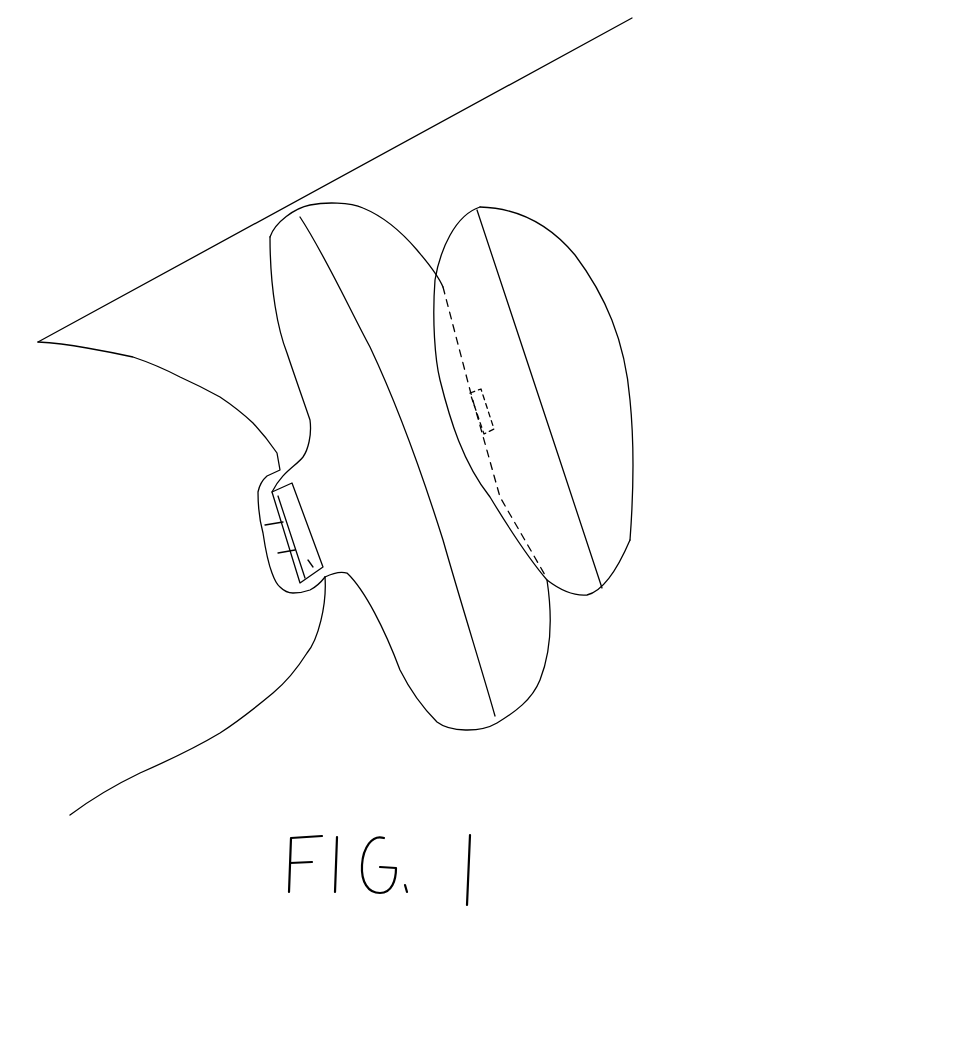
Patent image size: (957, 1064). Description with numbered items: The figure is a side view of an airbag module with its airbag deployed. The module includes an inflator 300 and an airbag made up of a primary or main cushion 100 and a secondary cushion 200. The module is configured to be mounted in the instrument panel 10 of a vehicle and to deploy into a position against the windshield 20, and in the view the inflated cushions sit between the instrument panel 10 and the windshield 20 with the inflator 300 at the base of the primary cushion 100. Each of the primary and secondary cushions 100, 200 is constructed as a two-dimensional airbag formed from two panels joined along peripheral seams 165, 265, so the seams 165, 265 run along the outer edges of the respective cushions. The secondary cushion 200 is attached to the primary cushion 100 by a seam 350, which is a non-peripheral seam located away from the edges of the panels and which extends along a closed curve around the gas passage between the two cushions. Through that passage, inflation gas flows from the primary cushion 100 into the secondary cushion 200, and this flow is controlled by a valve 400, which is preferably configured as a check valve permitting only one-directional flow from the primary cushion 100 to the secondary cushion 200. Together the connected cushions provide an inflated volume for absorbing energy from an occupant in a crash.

The instrument panel 10 is at (138, 357).
The windshield 20 is at (408, 137).
The primary cushion 100 is at (363, 235).
The peripheral seam 165 is at (487, 680).
The secondary cushion 200 is at (540, 270).
The peripheral seam 265 is at (572, 493).
The inflator 300 is at (327, 573).
The seam 350 is at (502, 487).
The valve 400 is at (484, 424).